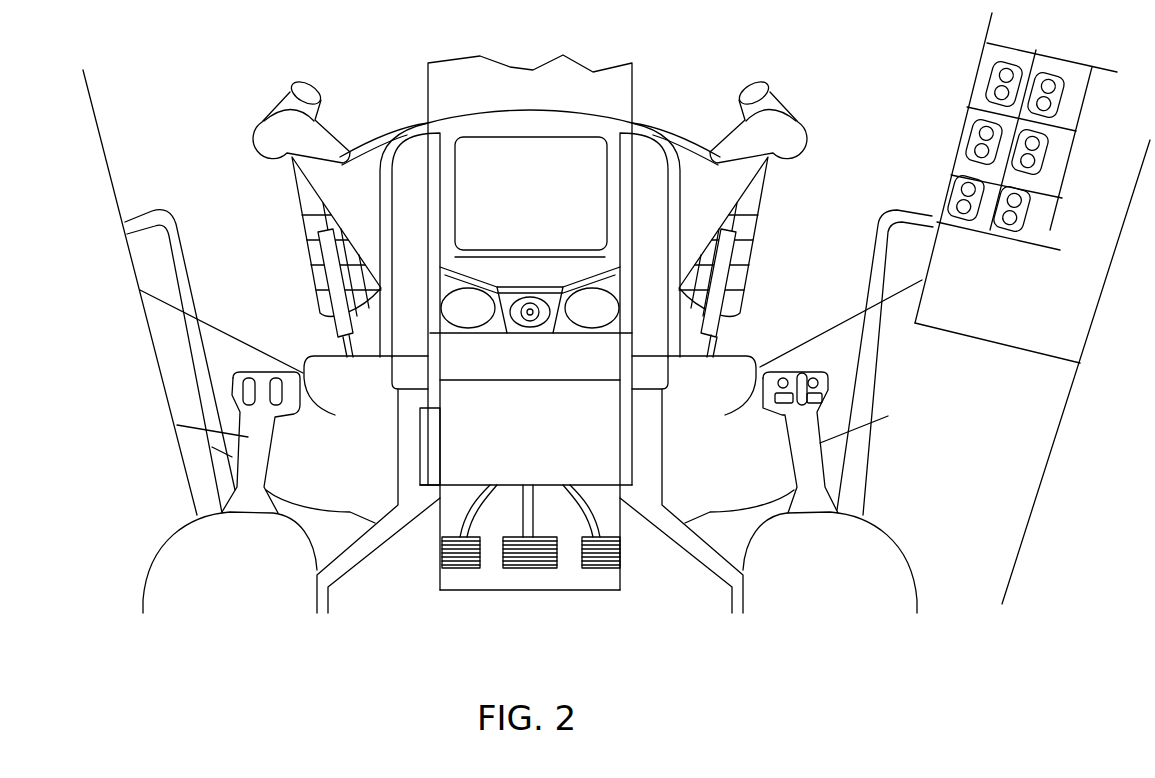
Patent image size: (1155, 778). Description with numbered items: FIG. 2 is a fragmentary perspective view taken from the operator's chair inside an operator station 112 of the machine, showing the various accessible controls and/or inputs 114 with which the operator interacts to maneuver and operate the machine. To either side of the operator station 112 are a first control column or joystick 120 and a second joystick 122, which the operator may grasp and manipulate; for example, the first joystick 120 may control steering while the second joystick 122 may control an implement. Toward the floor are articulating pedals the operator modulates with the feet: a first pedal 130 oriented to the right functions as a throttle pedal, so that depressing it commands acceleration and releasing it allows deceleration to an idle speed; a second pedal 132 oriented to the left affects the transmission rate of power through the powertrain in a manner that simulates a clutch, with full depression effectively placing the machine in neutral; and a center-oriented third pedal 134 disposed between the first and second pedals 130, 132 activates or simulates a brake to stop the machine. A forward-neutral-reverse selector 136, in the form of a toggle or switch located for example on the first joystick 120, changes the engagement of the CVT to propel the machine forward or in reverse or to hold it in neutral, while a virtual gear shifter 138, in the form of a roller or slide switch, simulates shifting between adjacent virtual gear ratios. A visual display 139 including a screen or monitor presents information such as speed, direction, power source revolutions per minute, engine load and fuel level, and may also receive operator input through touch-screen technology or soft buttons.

The operator station 112 is at (830, 132).
The controls and/or inputs 114 is at (549, 584).
The first control column or joystick 120 is at (217, 366).
The second joystick 122 is at (810, 443).
The first pedal 130 is at (625, 556).
The second pedal 132 is at (462, 550).
The third pedal 134 is at (536, 557).
The forward-neutral-reverse (F-N-R) selector 136 is at (276, 385).
The virtual gear shifter 138 is at (250, 385).
The visual display 139 is at (538, 128).